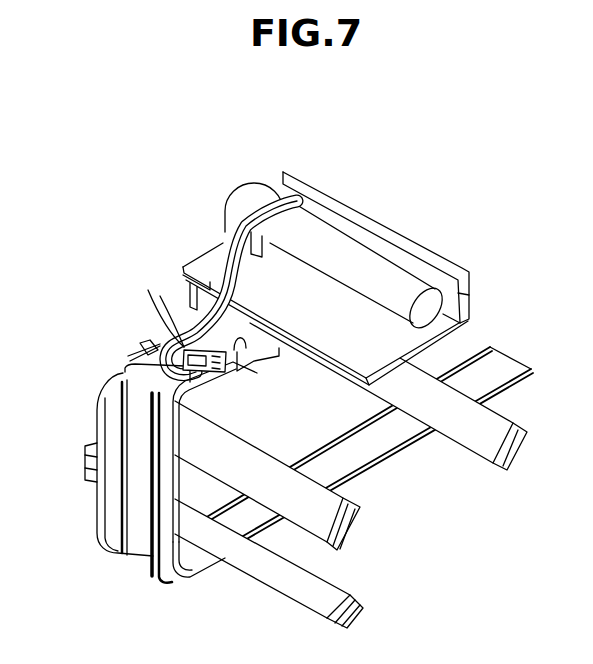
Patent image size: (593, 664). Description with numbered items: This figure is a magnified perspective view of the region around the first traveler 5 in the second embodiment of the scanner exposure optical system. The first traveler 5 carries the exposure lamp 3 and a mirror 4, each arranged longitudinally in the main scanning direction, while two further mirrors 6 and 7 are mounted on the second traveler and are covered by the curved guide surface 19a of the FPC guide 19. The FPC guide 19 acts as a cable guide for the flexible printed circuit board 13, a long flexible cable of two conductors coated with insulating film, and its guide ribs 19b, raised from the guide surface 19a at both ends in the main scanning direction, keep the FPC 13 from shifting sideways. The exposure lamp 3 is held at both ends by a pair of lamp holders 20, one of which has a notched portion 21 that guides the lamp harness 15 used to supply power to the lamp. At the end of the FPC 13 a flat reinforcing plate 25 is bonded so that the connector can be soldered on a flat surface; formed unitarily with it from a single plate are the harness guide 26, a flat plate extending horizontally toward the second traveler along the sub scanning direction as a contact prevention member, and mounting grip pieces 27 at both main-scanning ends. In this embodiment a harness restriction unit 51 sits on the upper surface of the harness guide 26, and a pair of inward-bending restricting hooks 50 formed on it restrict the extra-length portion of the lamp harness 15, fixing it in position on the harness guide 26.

The exposure lamp 3 is at (390, 273).
The mirror 4 is at (473, 432).
The first traveler 5 is at (342, 213).
The mirror 6 is at (350, 492).
The mirror 7 is at (330, 580).
The flexible printed circuit board (FPC) 13 is at (503, 365).
The lamp harness 15 is at (223, 278).
The FPC guide 19 is at (209, 578).
The guide surface 19a is at (110, 497).
The guide ribs 19b is at (152, 587).
The lamp holder 20 is at (248, 184).
The notched portion 21 is at (226, 208).
The reinforcing plate 25 is at (240, 370).
The harness guide 26 is at (133, 358).
The mounting grip pieces 27 is at (279, 357).
The restricting hooks 50 is at (153, 300).
The harness restriction unit 51 is at (150, 343).